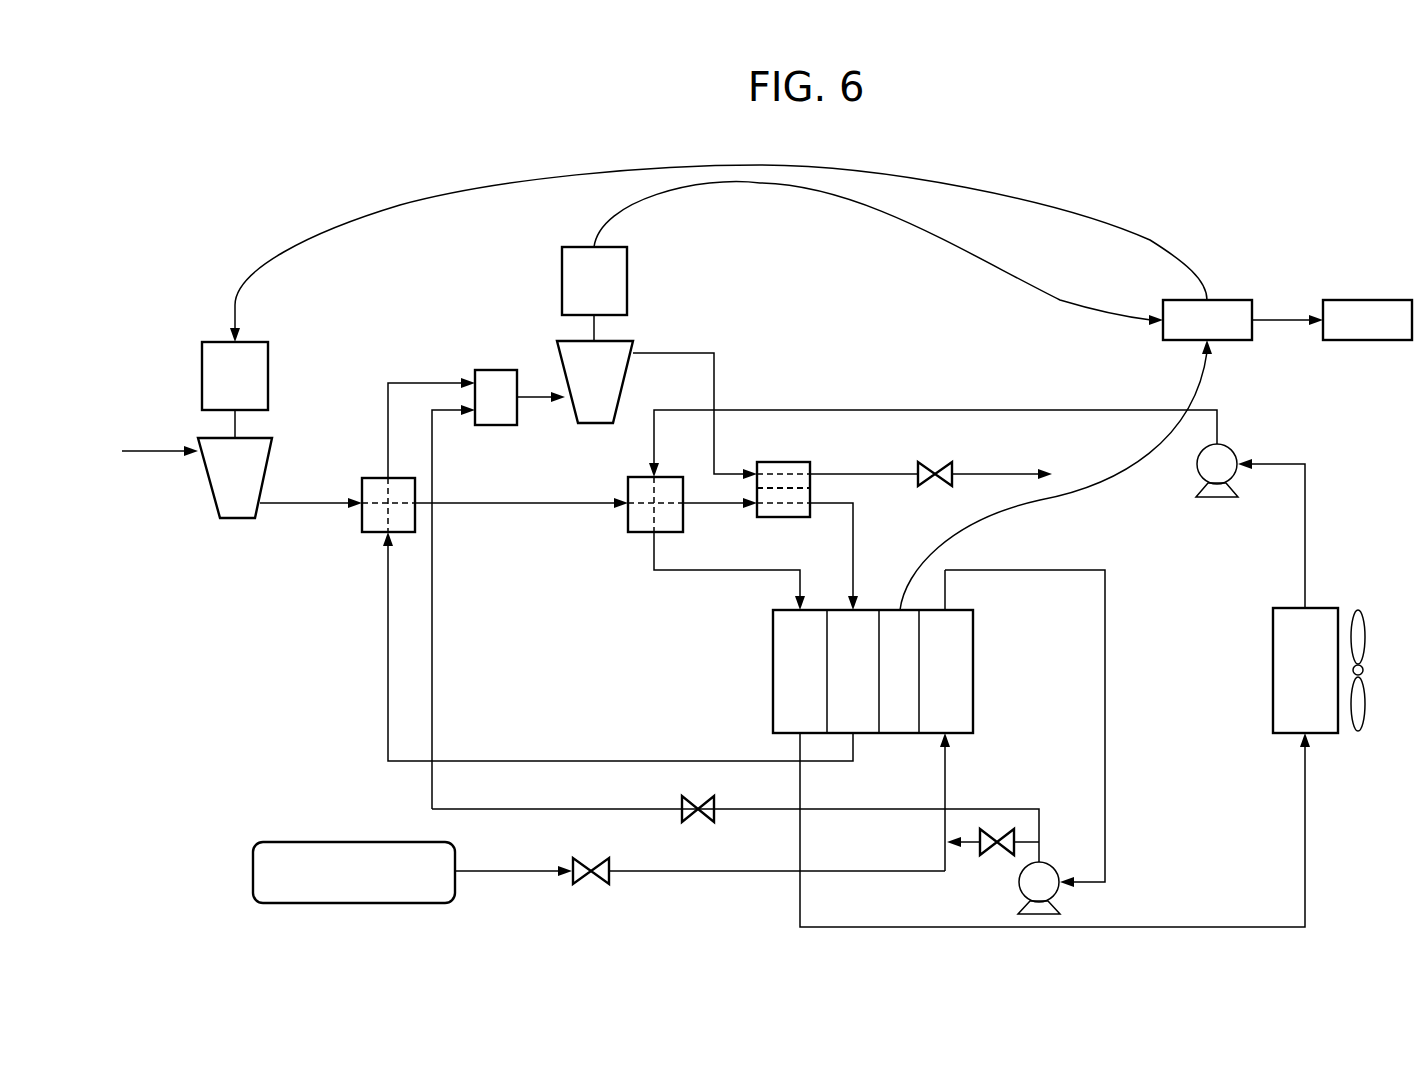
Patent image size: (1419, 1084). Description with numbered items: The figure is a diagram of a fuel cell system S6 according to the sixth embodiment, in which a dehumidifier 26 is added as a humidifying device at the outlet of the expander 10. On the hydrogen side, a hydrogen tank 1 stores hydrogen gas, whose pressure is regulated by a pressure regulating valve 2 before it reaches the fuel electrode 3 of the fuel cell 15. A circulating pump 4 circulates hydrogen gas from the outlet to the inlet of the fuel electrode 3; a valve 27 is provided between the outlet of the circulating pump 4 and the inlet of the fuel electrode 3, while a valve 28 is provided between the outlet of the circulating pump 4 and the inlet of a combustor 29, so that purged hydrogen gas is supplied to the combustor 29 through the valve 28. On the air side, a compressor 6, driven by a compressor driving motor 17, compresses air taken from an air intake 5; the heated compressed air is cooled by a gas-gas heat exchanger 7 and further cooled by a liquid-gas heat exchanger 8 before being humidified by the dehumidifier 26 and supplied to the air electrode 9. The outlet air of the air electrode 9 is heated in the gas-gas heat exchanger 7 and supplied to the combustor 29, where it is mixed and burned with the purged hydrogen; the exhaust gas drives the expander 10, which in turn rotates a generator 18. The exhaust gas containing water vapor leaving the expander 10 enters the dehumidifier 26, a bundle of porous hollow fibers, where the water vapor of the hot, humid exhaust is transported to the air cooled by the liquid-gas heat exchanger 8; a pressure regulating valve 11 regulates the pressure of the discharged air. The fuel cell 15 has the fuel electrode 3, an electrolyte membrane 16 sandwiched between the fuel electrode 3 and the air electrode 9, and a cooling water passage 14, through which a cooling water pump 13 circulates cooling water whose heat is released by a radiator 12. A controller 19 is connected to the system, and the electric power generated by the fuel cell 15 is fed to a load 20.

The fuel cell system S6 is at (280, 195).
The hydrogen tank 1 is at (352, 842).
The pressure regulating valve 2 is at (582, 858).
The fuel electrode 3 is at (945, 645).
The circulating pump 4 is at (1049, 866).
The air intake 5 is at (148, 451).
The compressor 6 is at (210, 490).
The gas-gas heat exchanger 7 is at (362, 488).
The liquid-gas heat exchanger 8 is at (628, 487).
The air electrode 9 is at (861, 671).
The expander 10 is at (626, 380).
The pressure regulating valve 11 is at (935, 487).
The radiator 12 is at (1273, 645).
The cooling water pump 13 is at (1215, 498).
The cooling water passage 14 is at (804, 671).
The fuel cell 15 is at (992, 536).
The electrolyte membrane 16 is at (900, 671).
The compressor driving motor 17 is at (202, 364).
The generator 18 is at (562, 262).
The controller 19 is at (1227, 300).
The load 20 is at (1377, 300).
The dehumidifier 26 is at (785, 517).
The valve 27 is at (990, 855).
The valve 28 is at (695, 822).
The combustor 29 is at (487, 370).